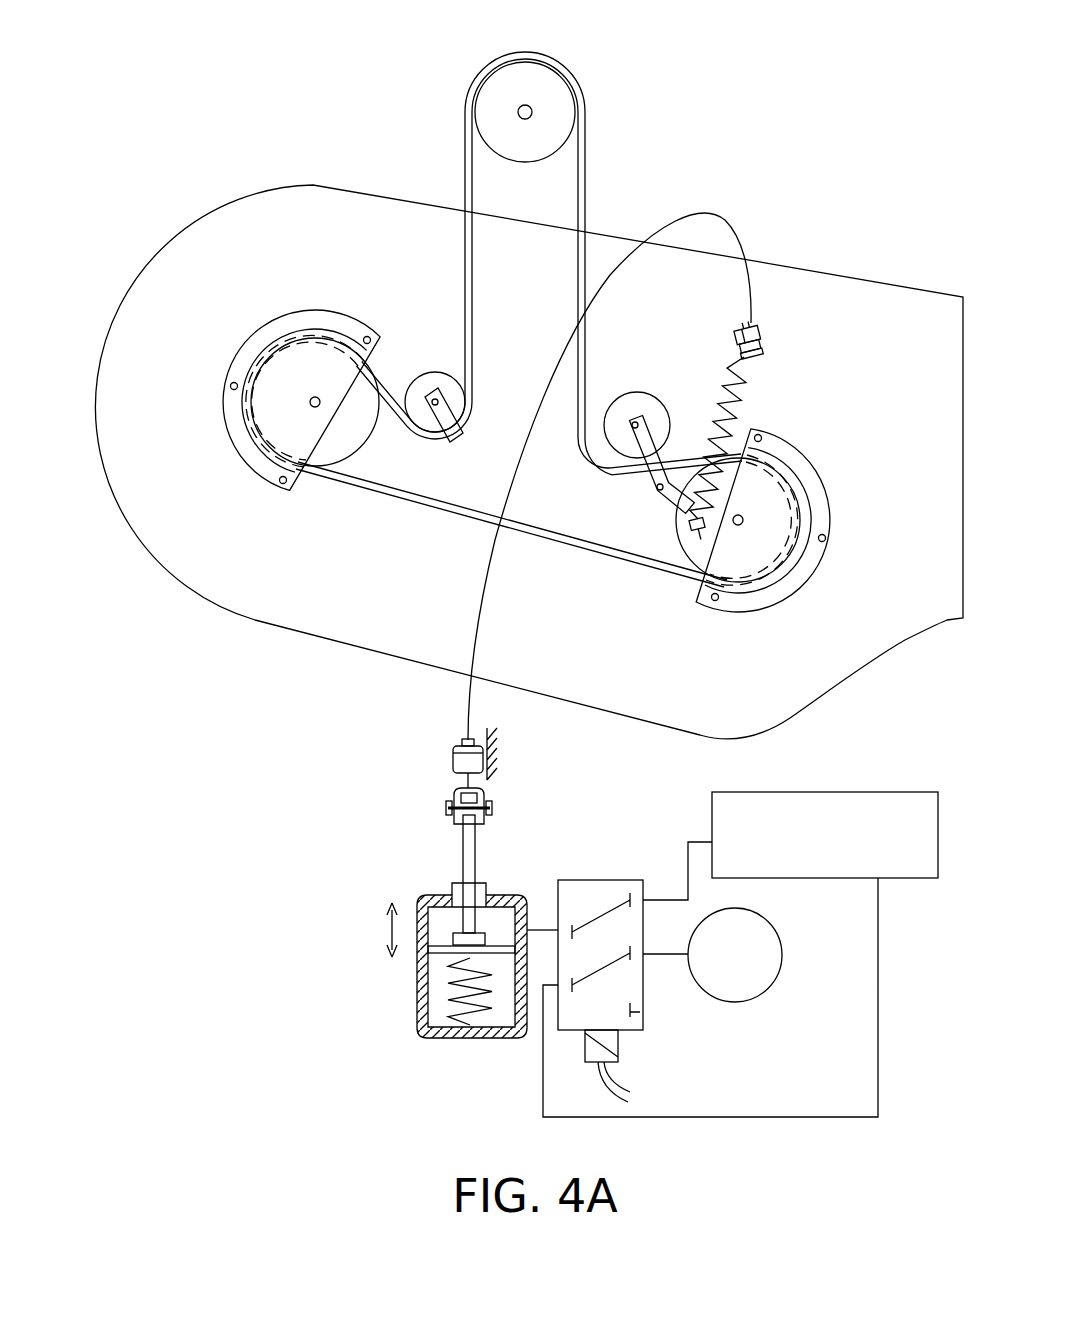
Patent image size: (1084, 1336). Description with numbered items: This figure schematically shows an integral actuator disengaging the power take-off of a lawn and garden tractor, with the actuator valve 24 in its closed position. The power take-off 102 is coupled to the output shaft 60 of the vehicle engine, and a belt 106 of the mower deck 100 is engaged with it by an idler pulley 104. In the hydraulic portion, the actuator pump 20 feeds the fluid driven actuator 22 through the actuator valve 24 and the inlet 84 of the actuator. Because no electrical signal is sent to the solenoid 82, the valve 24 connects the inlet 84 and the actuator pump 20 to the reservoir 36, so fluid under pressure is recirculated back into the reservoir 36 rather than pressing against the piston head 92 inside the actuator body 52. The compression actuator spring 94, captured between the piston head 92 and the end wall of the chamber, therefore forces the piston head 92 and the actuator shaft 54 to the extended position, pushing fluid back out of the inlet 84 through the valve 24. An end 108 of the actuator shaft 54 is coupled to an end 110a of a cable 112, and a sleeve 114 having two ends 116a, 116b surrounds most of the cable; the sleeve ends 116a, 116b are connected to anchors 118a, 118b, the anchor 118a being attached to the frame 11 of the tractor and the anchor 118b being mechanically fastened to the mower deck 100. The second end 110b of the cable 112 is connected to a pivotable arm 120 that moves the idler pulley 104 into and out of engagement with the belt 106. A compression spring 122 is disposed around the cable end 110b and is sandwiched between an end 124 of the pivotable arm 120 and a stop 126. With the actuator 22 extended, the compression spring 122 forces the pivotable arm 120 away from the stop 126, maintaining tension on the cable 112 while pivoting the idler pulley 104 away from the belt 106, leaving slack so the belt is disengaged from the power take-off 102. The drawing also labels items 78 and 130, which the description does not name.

The mower deck 100 is at (828, 190).
The power take-off 102 is at (483, 48).
The output shaft 60 is at (515, 110).
The belt 106 is at (463, 262).
The cable 112 is at (452, 585).
The idler pulley 104 is at (637, 403).
The pivotable arm 120 is at (655, 470).
The lever pivot 130 is at (662, 500).
The end of the pivotable arm 124 is at (673, 530).
The compression spring 122 is at (672, 408).
The anchor 118b is at (735, 327).
The stop 126 is at (762, 362).
The sleeve end 116b is at (760, 343).
The second end of the cable 110b is at (683, 575).
The sleeve 114 is at (472, 642).
The sleeve end 116a is at (464, 742).
The anchor 118a is at (460, 762).
The frame 11 is at (520, 752).
The end of the cable 110a is at (473, 782).
The end of the actuator shaft 108 is at (460, 806).
The fluid driven actuator 22 is at (375, 1008).
The actuator shaft 54 is at (470, 852).
The actuator body 52 is at (512, 1040).
The piston head 92 is at (440, 950).
The compression actuator spring 94 is at (487, 1020).
The inlet 84 is at (540, 925).
The actuator valve 24 is at (620, 872).
The pump line 78 is at (660, 955).
The solenoid 82 is at (616, 1043).
The reservoir 36 is at (885, 790).
The actuator pump 20 is at (740, 990).